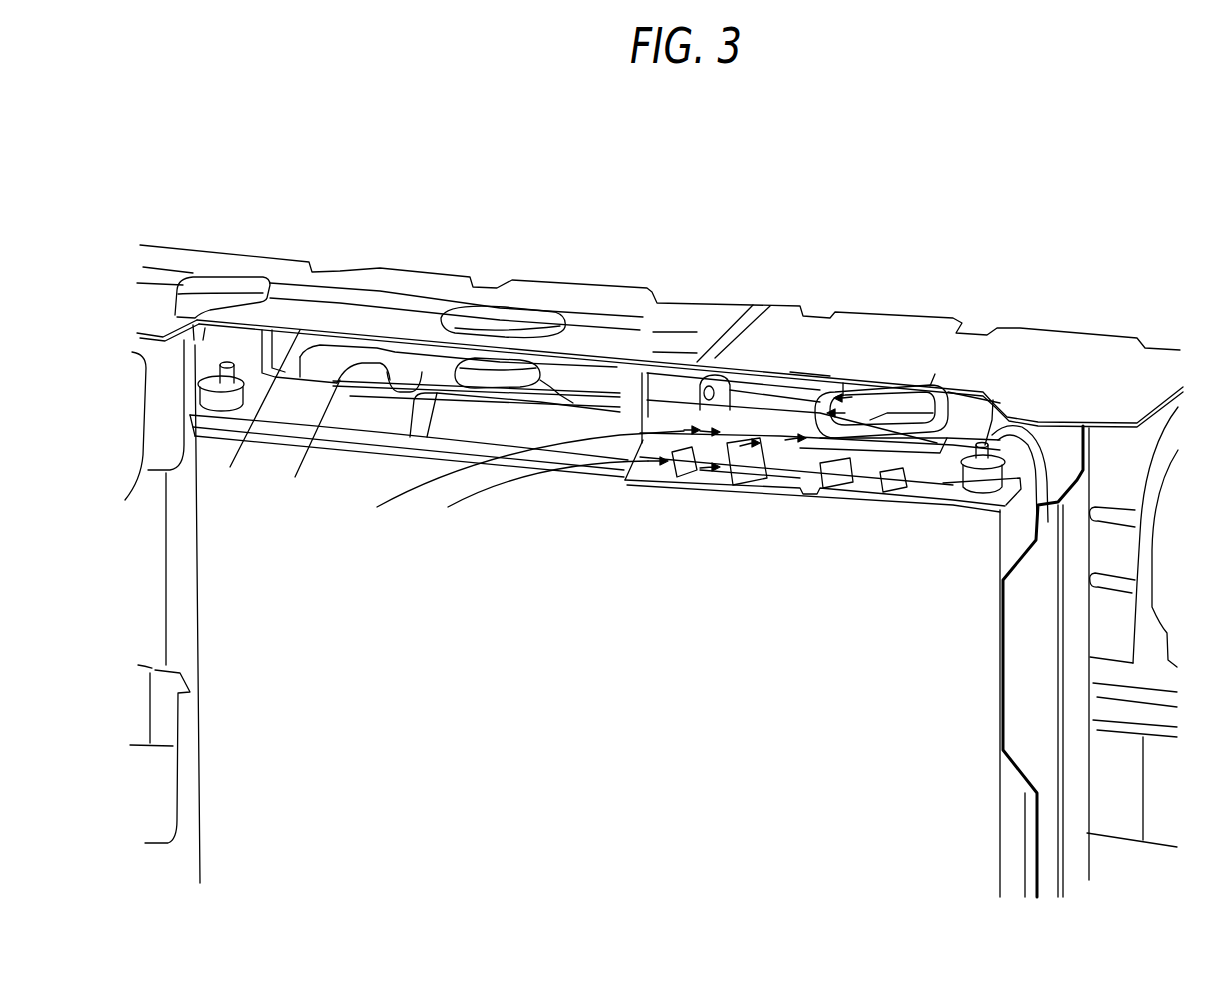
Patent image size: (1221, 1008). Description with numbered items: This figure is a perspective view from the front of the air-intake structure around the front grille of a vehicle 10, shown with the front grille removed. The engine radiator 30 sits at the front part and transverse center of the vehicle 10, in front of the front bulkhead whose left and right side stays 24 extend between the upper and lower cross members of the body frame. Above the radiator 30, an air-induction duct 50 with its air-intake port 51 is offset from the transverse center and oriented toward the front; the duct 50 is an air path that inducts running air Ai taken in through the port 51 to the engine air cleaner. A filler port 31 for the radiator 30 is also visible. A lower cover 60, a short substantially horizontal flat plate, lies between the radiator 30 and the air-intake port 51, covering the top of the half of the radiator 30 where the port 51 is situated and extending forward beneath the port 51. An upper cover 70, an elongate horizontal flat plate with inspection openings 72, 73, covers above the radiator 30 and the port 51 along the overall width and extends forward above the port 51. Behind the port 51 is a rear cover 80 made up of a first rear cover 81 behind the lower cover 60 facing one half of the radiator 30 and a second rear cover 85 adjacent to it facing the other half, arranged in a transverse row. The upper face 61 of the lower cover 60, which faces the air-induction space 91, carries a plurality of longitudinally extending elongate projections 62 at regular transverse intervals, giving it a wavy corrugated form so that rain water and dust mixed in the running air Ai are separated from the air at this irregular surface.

The vehicle 10 is at (185, 160).
The side stay 24 is at (178, 562).
The radiator 30 is at (952, 705).
The filler port 31 is at (483, 363).
The air-induction duct 50 is at (900, 326).
The air-intake port 51 is at (892, 403).
The lower cover 60 is at (823, 532).
The upper face 61 is at (767, 475).
The elongate projection 62 is at (707, 480).
The upper cover 70 is at (1040, 345).
The inspection opening 72 is at (525, 300).
The inspection opening 73 is at (683, 355).
The rear cover 80 is at (623, 183).
The first rear cover 81 is at (662, 390).
The second rear cover 85 is at (392, 353).
The air-induction space 91 is at (805, 384).
The running air Ai is at (457, 435).